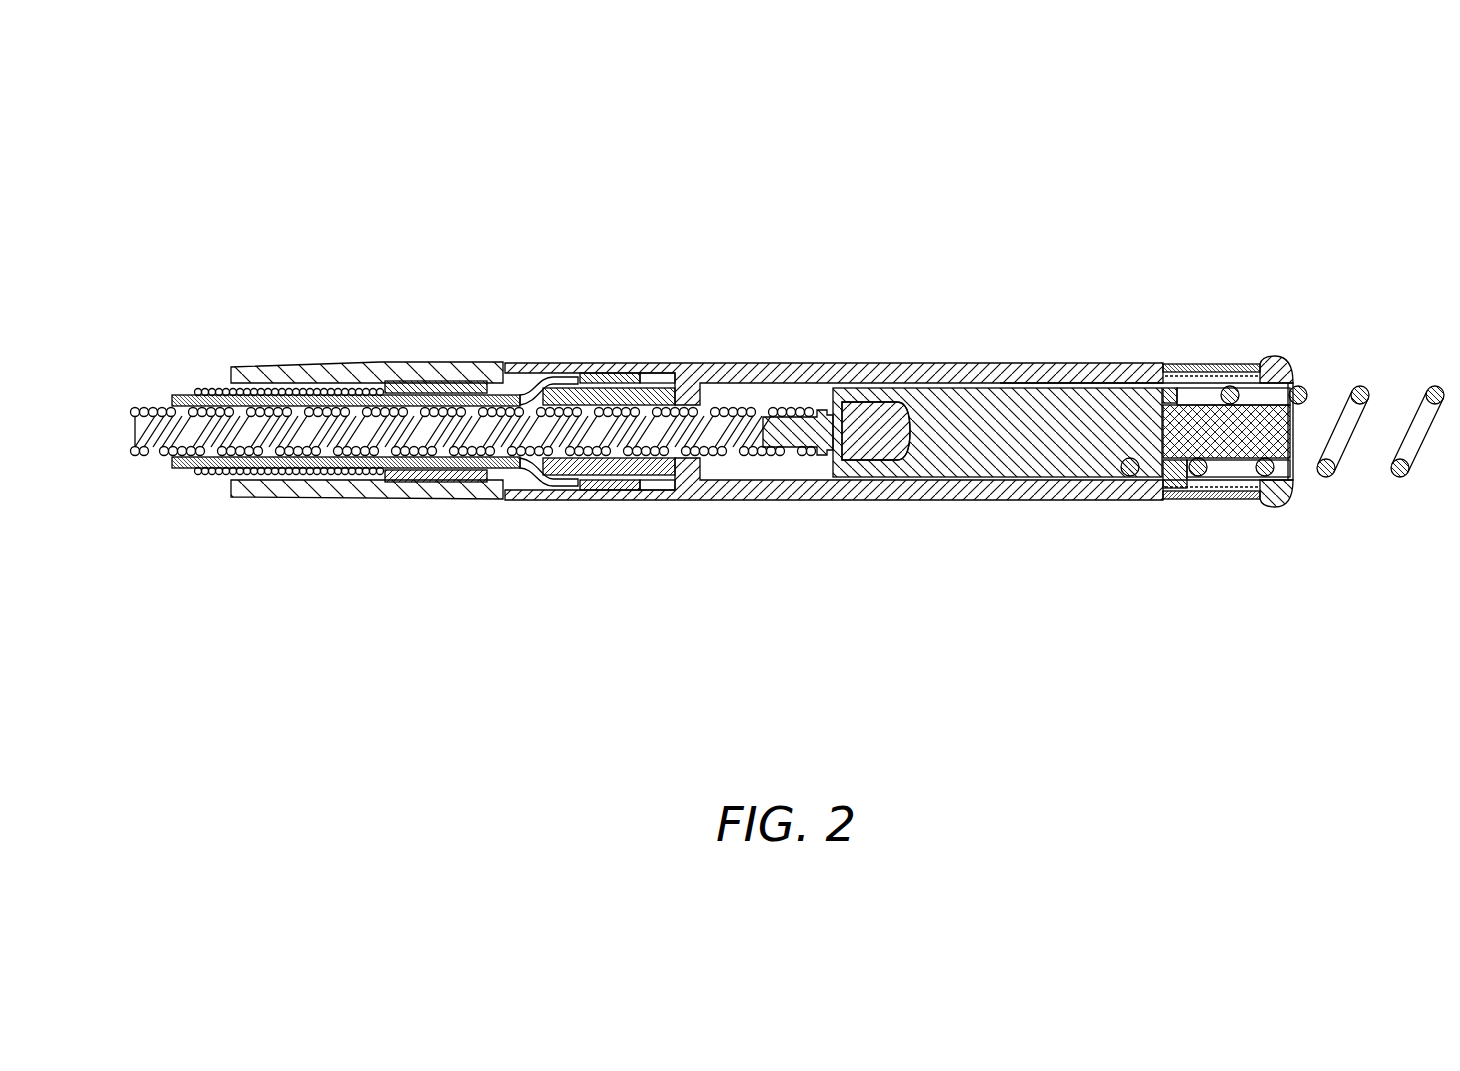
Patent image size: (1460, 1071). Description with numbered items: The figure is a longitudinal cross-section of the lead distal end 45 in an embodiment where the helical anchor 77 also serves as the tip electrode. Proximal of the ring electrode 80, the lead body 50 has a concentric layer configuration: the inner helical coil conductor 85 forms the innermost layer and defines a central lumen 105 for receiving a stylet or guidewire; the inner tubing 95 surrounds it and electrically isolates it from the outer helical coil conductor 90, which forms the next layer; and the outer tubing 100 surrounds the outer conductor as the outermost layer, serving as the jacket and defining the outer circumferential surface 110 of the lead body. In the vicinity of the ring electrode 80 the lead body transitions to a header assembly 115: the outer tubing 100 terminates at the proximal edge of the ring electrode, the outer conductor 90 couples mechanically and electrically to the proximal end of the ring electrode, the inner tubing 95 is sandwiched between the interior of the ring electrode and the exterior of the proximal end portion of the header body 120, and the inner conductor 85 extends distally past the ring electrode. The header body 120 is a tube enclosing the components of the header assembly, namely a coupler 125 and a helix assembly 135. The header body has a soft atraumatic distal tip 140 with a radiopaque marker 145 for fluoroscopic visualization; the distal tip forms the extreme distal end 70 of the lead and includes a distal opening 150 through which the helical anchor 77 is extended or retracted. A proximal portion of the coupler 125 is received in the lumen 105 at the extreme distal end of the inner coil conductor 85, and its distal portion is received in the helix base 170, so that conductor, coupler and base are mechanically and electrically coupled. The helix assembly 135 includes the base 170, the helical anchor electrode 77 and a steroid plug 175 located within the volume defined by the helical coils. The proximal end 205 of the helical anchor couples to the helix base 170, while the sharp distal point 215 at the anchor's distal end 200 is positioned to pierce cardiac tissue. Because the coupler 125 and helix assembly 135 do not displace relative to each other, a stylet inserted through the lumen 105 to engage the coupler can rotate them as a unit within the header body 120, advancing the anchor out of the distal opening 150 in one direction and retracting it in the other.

The lead distal end 45 is at (1130, 198).
The lead body 50 is at (258, 538).
The distal tip 70 is at (1268, 502).
The helical anchor 77 is at (1358, 377).
The ring electrode 80 is at (520, 362).
The inner helical coil conductor 85 is at (130, 402).
The outer helical coil conductor 90 is at (195, 390).
The inner tubing 95 is at (167, 393).
The outer tubing 100 is at (230, 363).
The central lumen 105 is at (128, 430).
The outer circumferential surface 110 is at (328, 499).
The header assembly 115 is at (617, 660).
The header body 120 is at (722, 365).
The coupler 125 is at (817, 403).
The helix assembly 135 is at (1167, 524).
The soft atraumatic distal tip 140 is at (1258, 348).
The radiopaque marker 145 is at (1168, 357).
The distal opening 150 is at (1305, 425).
The base 170 is at (1113, 377).
The steroid plug 175 is at (1290, 463).
The distal end 200 is at (1418, 485).
The proximal end 205 is at (1130, 478).
The distal point 215 is at (1430, 388).